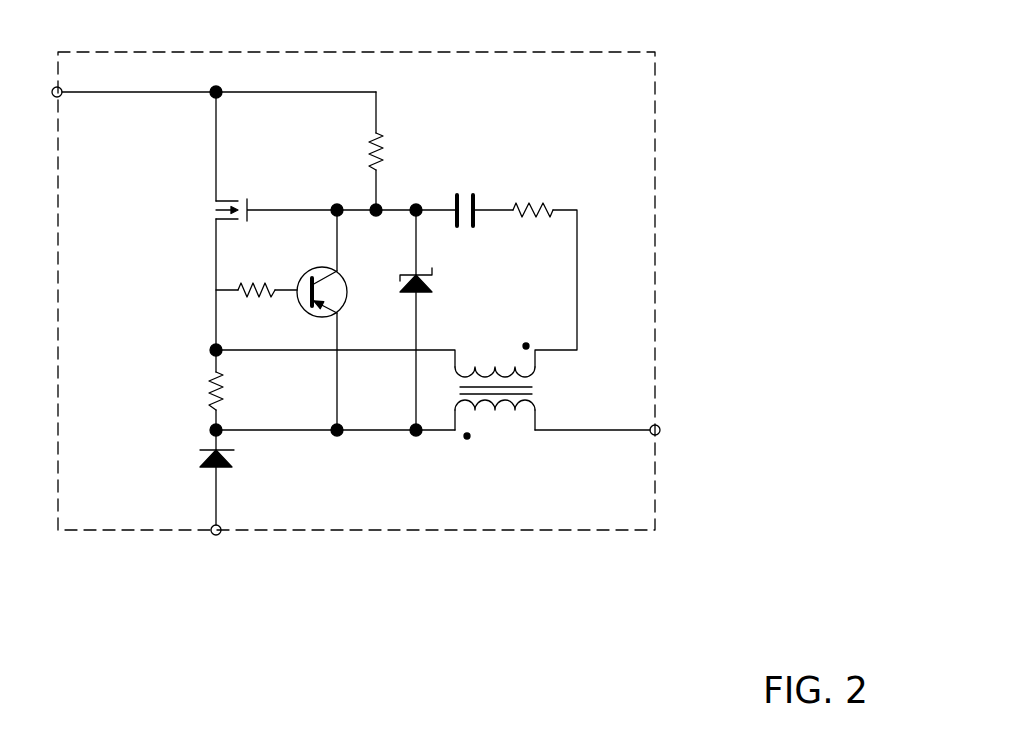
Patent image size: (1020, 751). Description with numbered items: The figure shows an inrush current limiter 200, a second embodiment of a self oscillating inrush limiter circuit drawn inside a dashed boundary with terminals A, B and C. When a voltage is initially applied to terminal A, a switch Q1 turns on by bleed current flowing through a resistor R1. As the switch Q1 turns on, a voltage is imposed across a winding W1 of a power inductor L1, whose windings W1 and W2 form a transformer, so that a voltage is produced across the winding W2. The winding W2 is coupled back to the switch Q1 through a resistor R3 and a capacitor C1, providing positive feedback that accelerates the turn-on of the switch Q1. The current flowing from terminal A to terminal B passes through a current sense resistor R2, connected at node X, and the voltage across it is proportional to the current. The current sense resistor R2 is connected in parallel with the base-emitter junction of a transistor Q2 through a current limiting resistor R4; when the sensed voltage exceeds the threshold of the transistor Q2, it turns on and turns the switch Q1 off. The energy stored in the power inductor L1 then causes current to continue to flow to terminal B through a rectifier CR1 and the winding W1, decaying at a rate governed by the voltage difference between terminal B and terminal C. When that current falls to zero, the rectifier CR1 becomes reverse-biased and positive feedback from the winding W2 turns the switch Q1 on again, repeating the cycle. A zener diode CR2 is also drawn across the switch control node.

The inrush current limiter 200 is at (477, 52).
The terminal A is at (202, 92).
The terminal B is at (612, 430).
The terminal C is at (215, 548).
The node X is at (321, 344).
The switch Q1 is at (257, 210).
The transistor Q2 is at (322, 278).
The resistor R1 is at (395, 151).
The current sense resistor R2 is at (235, 390).
The resistor R3 is at (545, 273).
The current limiting resistor R4 is at (256, 275).
The capacitor C1 is at (481, 193).
The rectifier CR1 is at (244, 477).
The zener diode CR2 is at (443, 320).
The power inductor L1 is at (511, 396).
The winding W1 is at (495, 431).
The winding W2 is at (495, 353).